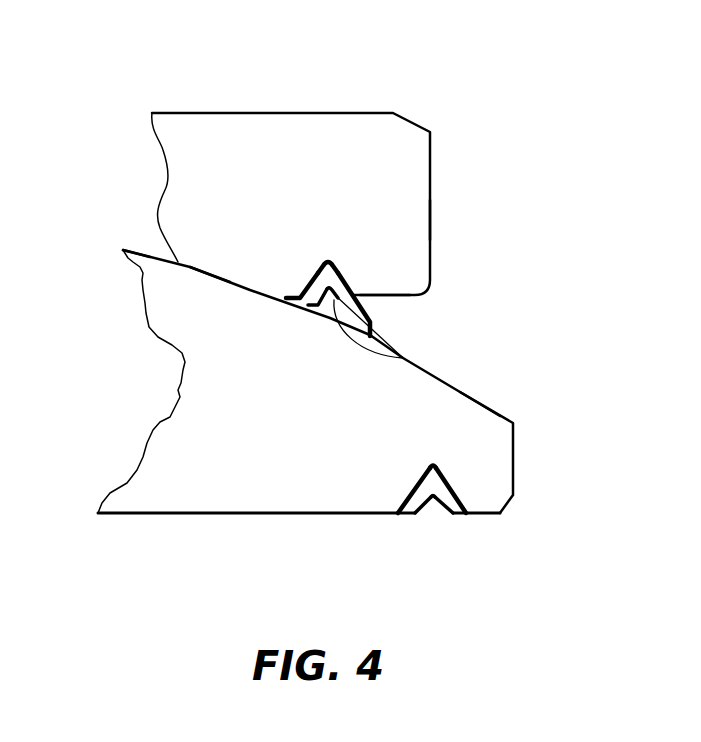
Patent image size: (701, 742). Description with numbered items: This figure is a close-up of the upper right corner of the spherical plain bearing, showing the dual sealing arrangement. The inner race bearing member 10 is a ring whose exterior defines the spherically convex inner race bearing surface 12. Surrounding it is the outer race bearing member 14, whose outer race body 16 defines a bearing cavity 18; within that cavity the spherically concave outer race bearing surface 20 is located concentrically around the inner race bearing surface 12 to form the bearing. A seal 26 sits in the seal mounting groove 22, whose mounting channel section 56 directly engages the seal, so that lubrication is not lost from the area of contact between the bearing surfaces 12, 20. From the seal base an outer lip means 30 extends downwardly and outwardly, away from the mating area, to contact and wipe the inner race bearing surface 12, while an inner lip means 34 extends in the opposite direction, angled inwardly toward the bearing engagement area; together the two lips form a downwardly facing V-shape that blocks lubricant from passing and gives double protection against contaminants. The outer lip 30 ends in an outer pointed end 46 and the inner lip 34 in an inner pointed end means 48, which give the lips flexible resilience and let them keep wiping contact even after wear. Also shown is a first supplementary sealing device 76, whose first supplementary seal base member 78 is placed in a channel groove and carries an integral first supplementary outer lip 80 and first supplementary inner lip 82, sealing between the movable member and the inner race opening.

The inner race bearing member 10 is at (216, 468).
The inner race bearing surface 12 is at (145, 257).
The outer race bearing member 14 is at (221, 165).
The outer race body 16 is at (431, 215).
The bearing cavity 18 is at (380, 323).
The outer race bearing surface 20 is at (212, 270).
The seal mounting groove 22 is at (338, 268).
The seal 26 is at (410, 357).
The outer lip means 30 is at (348, 292).
The inner lip means 34 is at (307, 290).
The outer pointed end 46 is at (372, 337).
The inner pointed end means 48 is at (303, 297).
The mounting channel section 56 is at (329, 260).
The first supplementary sealing device 76 is at (428, 500).
The first supplementary seal base member 78 is at (426, 468).
The first supplementary outer lip 80 is at (458, 495).
The first supplementary inner lip 82 is at (422, 487).